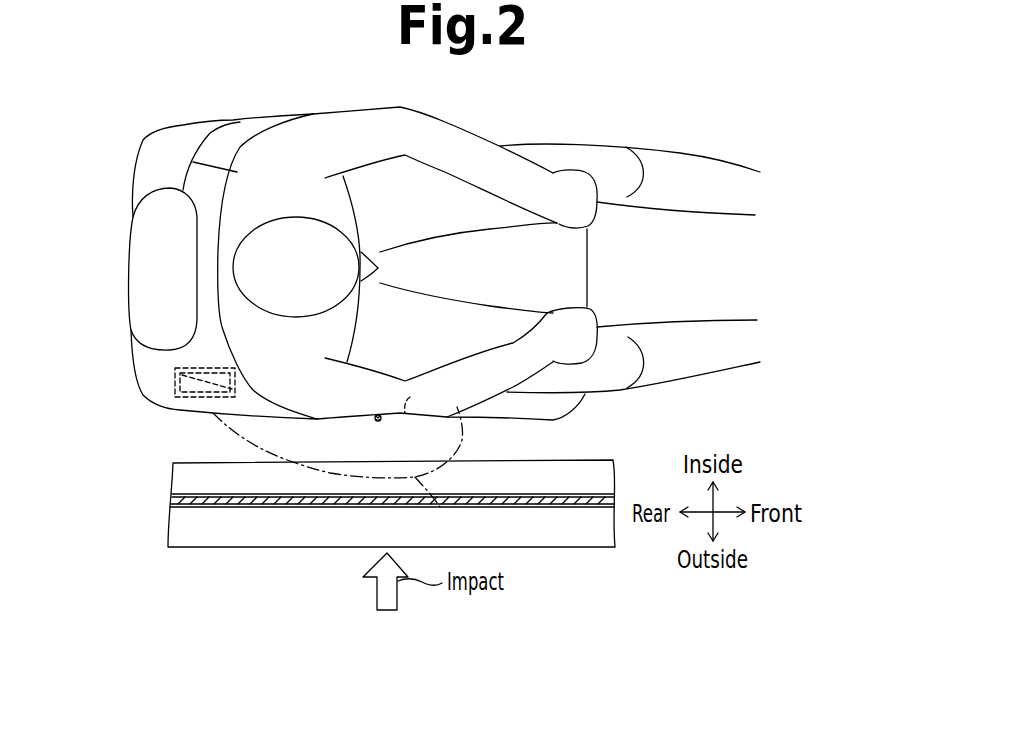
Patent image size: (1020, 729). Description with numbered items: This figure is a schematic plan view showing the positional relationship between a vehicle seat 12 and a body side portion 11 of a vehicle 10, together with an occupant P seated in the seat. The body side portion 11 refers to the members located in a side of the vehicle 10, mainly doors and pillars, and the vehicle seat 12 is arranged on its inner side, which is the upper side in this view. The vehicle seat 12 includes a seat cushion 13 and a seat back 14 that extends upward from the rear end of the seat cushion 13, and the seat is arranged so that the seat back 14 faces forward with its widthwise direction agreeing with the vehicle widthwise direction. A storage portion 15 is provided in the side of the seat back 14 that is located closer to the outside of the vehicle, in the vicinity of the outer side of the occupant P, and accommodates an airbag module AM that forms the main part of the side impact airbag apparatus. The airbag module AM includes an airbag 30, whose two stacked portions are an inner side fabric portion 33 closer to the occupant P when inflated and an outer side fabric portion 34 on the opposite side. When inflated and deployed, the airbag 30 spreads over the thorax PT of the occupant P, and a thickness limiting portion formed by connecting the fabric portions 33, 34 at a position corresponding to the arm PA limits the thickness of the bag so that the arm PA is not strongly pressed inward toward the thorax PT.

The vehicle 10 is at (597, 568).
The body side portion 11 is at (270, 538).
The vehicle seat 12 is at (102, 217).
The seat cushion 13 is at (573, 266).
The seat back 14 is at (134, 168).
The storage portion 15 is at (175, 368).
The airbag 30 is at (466, 437).
The inner side fabric portion 33 is at (412, 397).
The outer side fabric portion 34 is at (438, 507).
The occupant P is at (220, 262).
The thorax PT is at (340, 328).
The arm PA is at (378, 421).
The airbag module AM is at (189, 398).